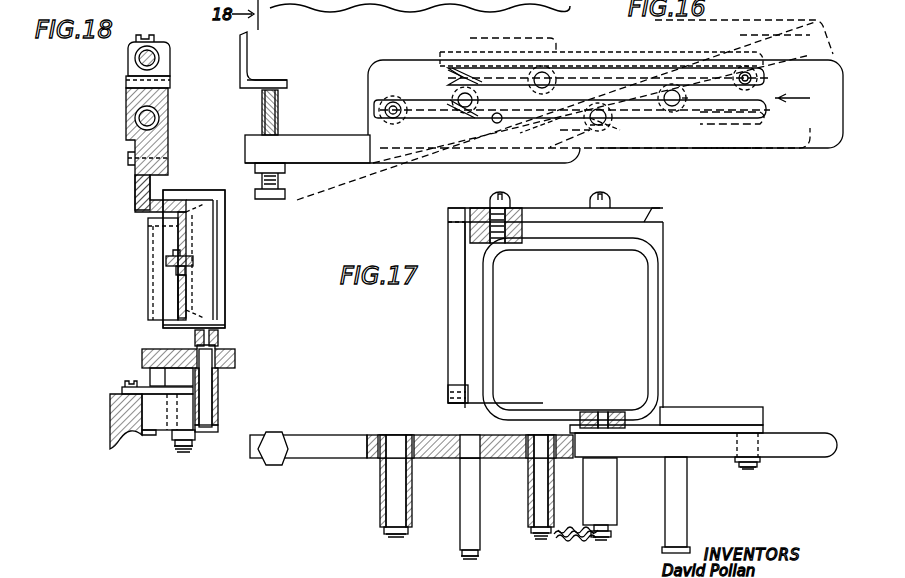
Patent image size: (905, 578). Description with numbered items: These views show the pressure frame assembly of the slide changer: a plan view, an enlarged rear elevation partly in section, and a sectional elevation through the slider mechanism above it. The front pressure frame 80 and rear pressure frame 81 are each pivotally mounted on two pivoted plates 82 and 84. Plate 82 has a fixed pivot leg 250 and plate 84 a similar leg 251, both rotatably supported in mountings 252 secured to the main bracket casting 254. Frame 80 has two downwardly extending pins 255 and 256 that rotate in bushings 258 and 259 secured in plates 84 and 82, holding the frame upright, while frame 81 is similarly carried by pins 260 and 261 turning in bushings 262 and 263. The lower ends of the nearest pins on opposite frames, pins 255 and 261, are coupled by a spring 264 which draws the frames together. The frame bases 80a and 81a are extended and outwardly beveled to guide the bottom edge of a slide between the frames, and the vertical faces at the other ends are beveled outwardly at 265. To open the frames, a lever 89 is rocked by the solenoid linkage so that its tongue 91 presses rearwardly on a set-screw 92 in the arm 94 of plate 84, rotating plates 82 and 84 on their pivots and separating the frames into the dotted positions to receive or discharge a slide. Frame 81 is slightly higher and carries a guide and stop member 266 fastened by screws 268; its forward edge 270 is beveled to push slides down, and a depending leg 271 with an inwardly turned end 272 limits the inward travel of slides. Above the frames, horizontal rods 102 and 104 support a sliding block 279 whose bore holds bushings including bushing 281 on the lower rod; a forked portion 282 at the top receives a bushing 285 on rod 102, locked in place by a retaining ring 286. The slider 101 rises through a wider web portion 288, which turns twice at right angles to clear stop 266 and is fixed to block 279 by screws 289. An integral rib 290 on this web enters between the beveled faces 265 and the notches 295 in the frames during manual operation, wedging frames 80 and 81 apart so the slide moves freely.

In FIG. 18, the front pressure frame 80 is at (160, 240).
In FIG. 16, the front pressure frame 80 is at (578, 66).
In FIG. 16, the base of front pressure frame 80a is at (769, 99).
In FIG. 18, the rear pressure frame 81 is at (205, 233).
In FIG. 16, the rear pressure frame 81 is at (536, 128).
In FIG. 17, the rear pressure frame 81 is at (528, 232).
In FIG. 16, the base of rear pressure frame 81a is at (765, 122).
In FIG. 17, the base of rear pressure frame 81a is at (714, 418).
In FIG. 16, the pivoted plate 82 is at (786, 132).
In FIG. 17, the pivoted plate 82 is at (705, 440).
In FIG. 18, the pivoted plate 84 is at (236, 355).
In FIG. 16, the pivoted plate 84 is at (395, 60).
In FIG. 17, the pivoted plate 84 is at (442, 460).
In FIG. 16, the lever 89 is at (248, 54).
In FIG. 16, the tongue 91 is at (282, 82).
In FIG. 16, the set-screw 92 is at (282, 116).
In FIG. 17, the set-screw 92 is at (272, 440).
In FIG. 16, the arm of plate 94 is at (308, 142).
In FIG. 18, the slider 101 is at (178, 300).
In FIG. 18, the upper horizontal rod 102 is at (130, 58).
In FIG. 18, the lower horizontal rod 104 is at (128, 117).
In FIG. 16, the pivot leg 250 is at (689, 98).
In FIG. 17, the pivot leg 250 is at (678, 504).
In FIG. 18, the pivot leg 251 is at (185, 446).
In FIG. 16, the pivot leg 251 is at (458, 100).
In FIG. 17, the pivot leg 251 is at (470, 478).
In FIG. 18, the mounting 252 is at (160, 420).
In FIG. 18, the main bracket casting 254 is at (112, 425).
In FIG. 18, the pin 255 is at (150, 374).
In FIG. 16, the pin 255 is at (534, 84).
In FIG. 17, the pin 255 is at (534, 506).
In FIG. 16, the pin 256 is at (757, 80).
In FIG. 17, the pin 256 is at (752, 468).
In FIG. 17, the bushing 258 is at (532, 530).
In FIG. 17, the bushing 259 is at (760, 460).
In FIG. 18, the pin 260 is at (212, 378).
In FIG. 16, the pin 260 is at (572, 101).
In FIG. 17, the pin 260 is at (396, 484).
In FIG. 16, the pin 261 is at (608, 132).
In FIG. 17, the pin 261 is at (600, 412).
In FIG. 18, the bushing 262 is at (218, 399).
In FIG. 17, the bushing 262 is at (382, 510).
In FIG. 17, the post 263 is at (608, 488).
In FIG. 17, the spring 264 is at (576, 542).
In FIG. 16, the beveled face 265 is at (452, 72).
In FIG. 17, the guide and stop member 266 is at (557, 206).
In FIG. 17, the screws 268 is at (492, 200).
In FIG. 17, the forward edge 270 is at (664, 213).
In FIG. 18, the depending leg 271 is at (226, 268).
In FIG. 17, the depending leg 271 is at (450, 318).
In FIG. 18, the inwardly turned end 272 is at (205, 320).
In FIG. 17, the inwardly turned end 272 is at (448, 390).
In FIG. 18, the block 279 is at (170, 96).
In FIG. 18, the bushing 281 is at (162, 117).
In FIG. 18, the forked portion 282 is at (165, 57).
In FIG. 18, the bushing 285 is at (170, 70).
In FIG. 18, the retaining ring 286 is at (158, 40).
In FIG. 18, the web portion 288 is at (134, 194).
In FIG. 18, the screws 289 is at (128, 161).
In FIG. 18, the rib 290 is at (166, 261).
In FIG. 18, the notch 295 is at (176, 274).